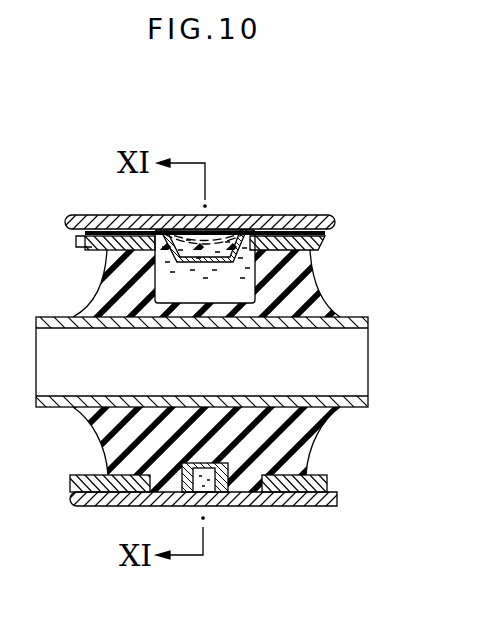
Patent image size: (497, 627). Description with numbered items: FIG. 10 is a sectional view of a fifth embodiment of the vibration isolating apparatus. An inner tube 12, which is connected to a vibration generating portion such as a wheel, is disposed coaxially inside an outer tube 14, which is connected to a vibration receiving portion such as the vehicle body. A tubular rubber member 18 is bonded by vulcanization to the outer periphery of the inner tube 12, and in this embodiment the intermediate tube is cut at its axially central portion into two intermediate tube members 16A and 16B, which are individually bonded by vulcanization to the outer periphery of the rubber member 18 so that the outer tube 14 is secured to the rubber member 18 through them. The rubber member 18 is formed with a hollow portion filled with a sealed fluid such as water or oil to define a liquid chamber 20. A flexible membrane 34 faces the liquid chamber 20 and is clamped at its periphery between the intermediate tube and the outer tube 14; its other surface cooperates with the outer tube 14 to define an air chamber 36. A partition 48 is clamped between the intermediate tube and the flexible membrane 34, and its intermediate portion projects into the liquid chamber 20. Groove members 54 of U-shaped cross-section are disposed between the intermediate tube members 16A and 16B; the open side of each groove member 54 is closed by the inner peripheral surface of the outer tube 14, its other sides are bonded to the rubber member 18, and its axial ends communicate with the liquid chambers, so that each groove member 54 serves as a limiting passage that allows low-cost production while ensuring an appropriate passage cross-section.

The inner tube 12 is at (345, 330).
The outer tube 14 is at (290, 215).
The intermediate tube member 16A is at (107, 252).
The intermediate tube member 16B is at (312, 256).
The tubular rubber member 18 is at (298, 288).
The liquid chamber 20 is at (188, 298).
The flexible membrane 34 is at (172, 230).
The air chamber 36 is at (222, 232).
The partition 48 is at (230, 263).
The groove member 54 is at (197, 492).